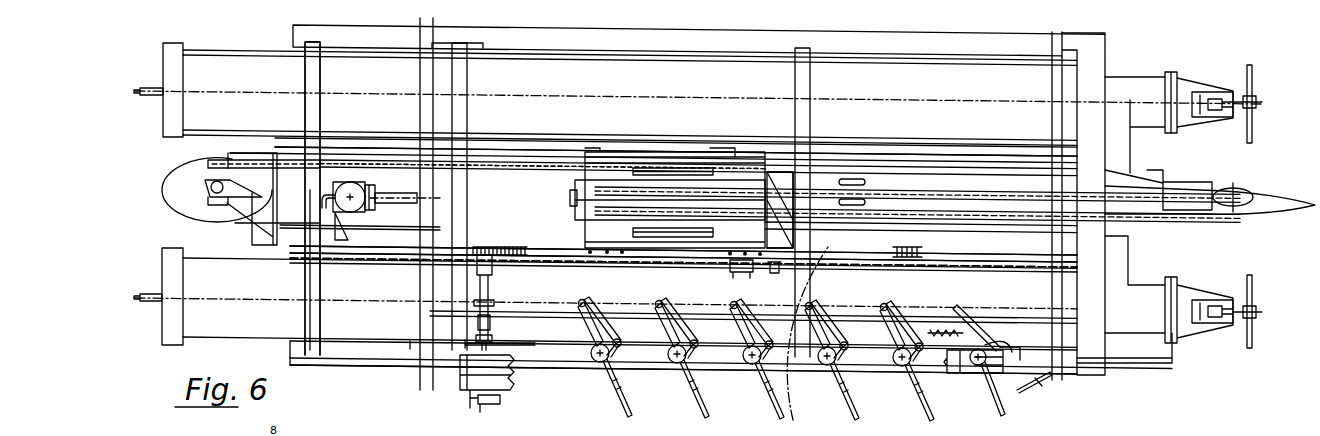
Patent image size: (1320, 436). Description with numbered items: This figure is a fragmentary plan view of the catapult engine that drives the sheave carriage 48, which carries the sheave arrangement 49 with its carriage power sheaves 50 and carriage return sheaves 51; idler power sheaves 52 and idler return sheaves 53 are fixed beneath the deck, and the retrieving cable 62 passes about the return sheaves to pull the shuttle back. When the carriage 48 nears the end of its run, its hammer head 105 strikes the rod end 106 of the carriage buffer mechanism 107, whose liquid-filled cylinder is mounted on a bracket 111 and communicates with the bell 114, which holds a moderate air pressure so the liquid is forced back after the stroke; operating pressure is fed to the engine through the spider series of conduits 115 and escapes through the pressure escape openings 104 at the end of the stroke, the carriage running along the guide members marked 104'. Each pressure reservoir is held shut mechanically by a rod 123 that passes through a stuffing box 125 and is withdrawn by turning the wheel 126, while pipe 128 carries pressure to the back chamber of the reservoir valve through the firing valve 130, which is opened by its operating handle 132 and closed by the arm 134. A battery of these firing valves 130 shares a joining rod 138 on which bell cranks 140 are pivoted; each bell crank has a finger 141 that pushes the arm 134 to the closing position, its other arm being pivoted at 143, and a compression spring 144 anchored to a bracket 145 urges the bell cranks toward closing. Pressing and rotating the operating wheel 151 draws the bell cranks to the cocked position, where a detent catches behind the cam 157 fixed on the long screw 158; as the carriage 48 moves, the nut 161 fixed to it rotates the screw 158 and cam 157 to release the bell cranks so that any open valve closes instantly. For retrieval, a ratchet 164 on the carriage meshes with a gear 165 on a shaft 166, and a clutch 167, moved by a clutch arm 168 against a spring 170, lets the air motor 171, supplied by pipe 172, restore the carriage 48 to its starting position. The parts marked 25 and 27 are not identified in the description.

The blade holder 25 is at (933, 311).
The cross slide 27 is at (775, 232).
The sheave carriage 48 is at (785, 195).
The sheave arrangement 49 is at (655, 168).
The carriage power sheaves 50 is at (576, 187).
The carriage return sheaves 51 is at (710, 165).
The idler power sheaves 52 is at (1270, 196).
The idler return sheaves 53 is at (180, 180).
The retrieving cable 62 is at (488, 165).
The pressure escape openings 104 is at (872, 181).
The guide rail 104' is at (676, 182).
The hammer head 105 is at (570, 197).
The rod end 106 is at (398, 193).
The carriage buffer mechanism 107 is at (385, 207).
The bracket 111 is at (348, 235).
The bell 114 is at (350, 190).
The spider series of conduits 115 is at (310, 280).
The rod 123 is at (1211, 94).
The stuffing box 125 is at (1196, 112).
The wheel 126 is at (1254, 132).
The pipe 128 is at (1136, 364).
The firing valve 130 is at (594, 364).
The operating handle 132 is at (624, 411).
The arm 134 is at (586, 328).
The rod 138 is at (628, 312).
The bell crank 140 is at (618, 345).
The finger 141 is at (589, 303).
The pivot 143 is at (618, 349).
The compression spring 144 is at (906, 325).
The bracket 145 is at (950, 367).
The operating wheel 151 is at (1032, 392).
The cam 157 is at (768, 272).
The long screw 158 is at (958, 271).
The nut 161 is at (760, 270).
The ratchet 164 is at (520, 252).
The gear 165 is at (485, 253).
The shaft 166 is at (490, 292).
The clutch 167 is at (490, 335).
The clutch arm 168 is at (528, 346).
The spring 170 is at (507, 386).
The air motor 171 is at (450, 380).
The pipe 172 is at (357, 368).